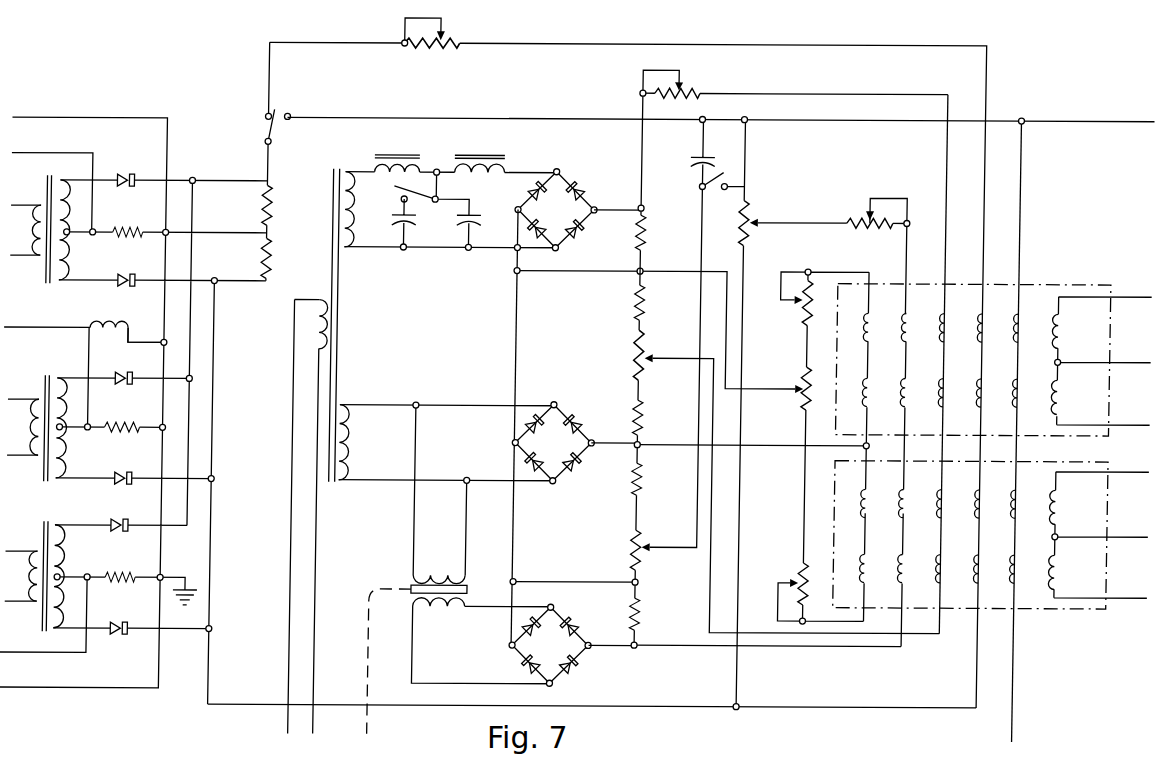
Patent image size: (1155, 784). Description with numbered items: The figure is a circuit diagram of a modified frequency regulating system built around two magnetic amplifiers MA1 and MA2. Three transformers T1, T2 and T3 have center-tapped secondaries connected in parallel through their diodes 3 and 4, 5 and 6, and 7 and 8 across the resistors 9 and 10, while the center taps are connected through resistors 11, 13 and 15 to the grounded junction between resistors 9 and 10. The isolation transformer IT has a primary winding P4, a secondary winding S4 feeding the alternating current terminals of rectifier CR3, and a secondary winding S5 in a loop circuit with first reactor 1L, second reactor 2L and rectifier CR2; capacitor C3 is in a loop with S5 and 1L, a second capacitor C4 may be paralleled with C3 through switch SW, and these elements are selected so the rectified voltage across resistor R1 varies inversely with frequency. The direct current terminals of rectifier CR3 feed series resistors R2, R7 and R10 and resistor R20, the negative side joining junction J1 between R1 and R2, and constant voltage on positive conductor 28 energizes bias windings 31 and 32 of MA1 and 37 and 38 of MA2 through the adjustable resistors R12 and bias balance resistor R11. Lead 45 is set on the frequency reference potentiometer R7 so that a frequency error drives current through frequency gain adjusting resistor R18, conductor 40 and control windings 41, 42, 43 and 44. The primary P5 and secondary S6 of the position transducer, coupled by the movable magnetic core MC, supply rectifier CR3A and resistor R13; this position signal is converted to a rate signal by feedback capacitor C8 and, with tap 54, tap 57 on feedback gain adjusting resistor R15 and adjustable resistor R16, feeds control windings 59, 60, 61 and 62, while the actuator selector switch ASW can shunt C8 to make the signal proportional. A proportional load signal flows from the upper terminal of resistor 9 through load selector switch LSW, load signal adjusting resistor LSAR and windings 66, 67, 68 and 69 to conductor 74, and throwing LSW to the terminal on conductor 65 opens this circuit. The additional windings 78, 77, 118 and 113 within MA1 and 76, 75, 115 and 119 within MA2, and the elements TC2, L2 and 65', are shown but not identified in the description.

The diode 3 is at (116, 180).
The diode 4 is at (116, 280).
The diode 5 is at (128, 372).
The diode 6 is at (108, 480).
The diode 7 is at (109, 528).
The diode 8 is at (108, 630).
The resistor 9 is at (278, 212).
The resistor 10 is at (273, 257).
The resistor 11 is at (114, 233).
The resistor 13 is at (107, 429).
The resistor 15 is at (107, 579).
The transformer T1 is at (47, 196).
The transformer T2 is at (47, 391).
The transformer T3 is at (47, 538).
The coil TC2 is at (106, 324).
The lead L2 is at (137, 331).
The load selector switch LSW is at (286, 129).
The load signal adjusting resistor LSAR is at (447, 38).
The conductor 65 is at (720, 103).
The supply line 65' is at (623, 359).
The first reactor 1L is at (381, 164).
The second reactor 2L is at (473, 164).
The switch SW is at (387, 192).
The secondary winding S5 is at (344, 236).
The second capacitor C4 is at (436, 236).
The capacitor C3 is at (501, 236).
The full-wave rectifier CR2 is at (575, 216).
The rectifier CR3 is at (572, 450).
The full-wave rectifier CR3A is at (582, 654).
The isolation transformer IT is at (337, 343).
The primary winding P4 is at (308, 516).
The secondary winding S4 is at (352, 465).
The primary winding P5 is at (435, 576).
The magnetic core MC is at (472, 588).
The secondary winding S6 is at (448, 610).
The junction J1 is at (642, 274).
The resistor R1 is at (647, 232).
The resistor R2 is at (643, 306).
The frequency reference potentiometer R7 is at (628, 357).
The resistor R10 is at (642, 420).
The resistor R20 is at (649, 485).
The tap 54 is at (653, 546).
The resistor R13 is at (643, 618).
The lead 45 is at (652, 352).
The positive conductor 28 is at (755, 445).
The conductor 74 is at (242, 692).
The conductor 40 is at (946, 254).
The feedback capacitor C8 is at (685, 168).
The actuator selector switch ASW is at (698, 195).
The feedback gain adjusting resistor R15 is at (756, 222).
The adjustable resistor R16 is at (857, 216).
The tap 57 is at (767, 231).
The frequency gain adjusting resistor R18 is at (693, 90).
The adjustable resistor R12 is at (796, 317).
The bias balance adjustable resistor R11 is at (794, 382).
The magnetic amplifier MA1 is at (1048, 285).
The magnetic amplifier MA2 is at (1060, 624).
The bias winding 32 is at (870, 332).
The bias winding 31 is at (872, 400).
The control winding 59 is at (908, 332).
The control winding 60 is at (910, 400).
The control winding 41 is at (948, 332).
The control winding 42 is at (948, 400).
The control winding 66 is at (985, 332).
The control winding 67 is at (986, 400).
The winding 78 is at (1022, 332).
The winding 77 is at (1022, 400).
The winding 118 is at (1064, 334).
The winding 113 is at (1062, 400).
The bias winding 37 is at (872, 514).
The bias winding 38 is at (872, 578).
The control winding 61 is at (910, 514).
The control winding 62 is at (910, 578).
The control winding 43 is at (950, 514).
The control winding 44 is at (948, 578).
The control winding 68 is at (988, 514).
The control winding 69 is at (986, 578).
The winding 76 is at (1026, 514).
The winding 75 is at (1022, 578).
The winding 115 is at (1066, 516).
The winding 119 is at (1062, 578).